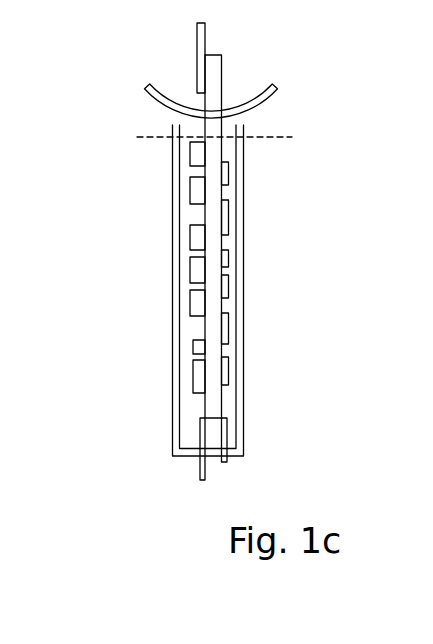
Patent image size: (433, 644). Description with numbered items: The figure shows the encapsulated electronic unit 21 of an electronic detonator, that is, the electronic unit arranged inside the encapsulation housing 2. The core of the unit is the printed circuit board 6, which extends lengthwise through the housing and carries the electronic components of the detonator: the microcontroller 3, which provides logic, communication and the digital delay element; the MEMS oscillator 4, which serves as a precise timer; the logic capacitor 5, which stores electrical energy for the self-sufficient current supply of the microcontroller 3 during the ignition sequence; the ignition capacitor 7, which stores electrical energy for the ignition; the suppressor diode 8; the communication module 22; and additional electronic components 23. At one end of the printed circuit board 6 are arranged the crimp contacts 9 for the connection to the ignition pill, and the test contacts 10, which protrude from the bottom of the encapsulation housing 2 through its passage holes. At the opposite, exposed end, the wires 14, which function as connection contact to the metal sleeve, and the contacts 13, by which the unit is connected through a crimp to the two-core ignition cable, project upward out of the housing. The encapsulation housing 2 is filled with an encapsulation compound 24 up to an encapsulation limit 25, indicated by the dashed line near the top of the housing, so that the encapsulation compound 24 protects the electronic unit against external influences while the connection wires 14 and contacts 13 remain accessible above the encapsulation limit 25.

The encapsulation housing 2 is at (238, 400).
The microcontroller 3 is at (200, 377).
The MEMS oscillator 4 is at (197, 345).
The logic capacitor 5 is at (197, 300).
The printed circuit board 6 is at (213, 70).
The ignition capacitor 7 is at (197, 190).
The suppressor diode 8 is at (197, 155).
The crimp contacts 9 is at (200, 473).
The test contacts 10 is at (227, 458).
The contacts 13 is at (203, 30).
The wires 14 is at (155, 103).
The encapsulated electronic unit 21 is at (162, 268).
The communication module 22 is at (224, 178).
The additional electronic components 23 is at (224, 258).
The encapsulation compound 24 is at (190, 420).
The encapsulation limit 25 is at (290, 138).